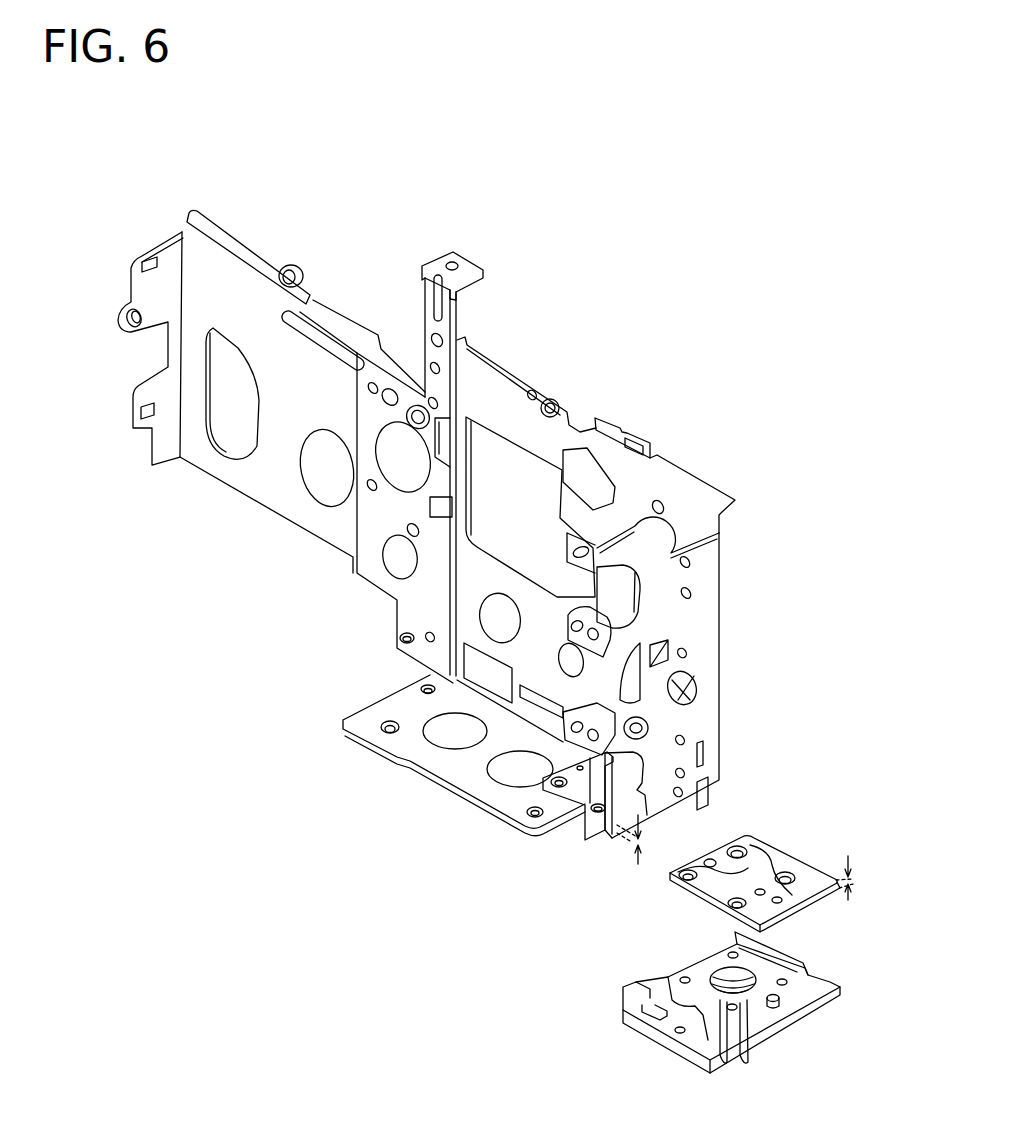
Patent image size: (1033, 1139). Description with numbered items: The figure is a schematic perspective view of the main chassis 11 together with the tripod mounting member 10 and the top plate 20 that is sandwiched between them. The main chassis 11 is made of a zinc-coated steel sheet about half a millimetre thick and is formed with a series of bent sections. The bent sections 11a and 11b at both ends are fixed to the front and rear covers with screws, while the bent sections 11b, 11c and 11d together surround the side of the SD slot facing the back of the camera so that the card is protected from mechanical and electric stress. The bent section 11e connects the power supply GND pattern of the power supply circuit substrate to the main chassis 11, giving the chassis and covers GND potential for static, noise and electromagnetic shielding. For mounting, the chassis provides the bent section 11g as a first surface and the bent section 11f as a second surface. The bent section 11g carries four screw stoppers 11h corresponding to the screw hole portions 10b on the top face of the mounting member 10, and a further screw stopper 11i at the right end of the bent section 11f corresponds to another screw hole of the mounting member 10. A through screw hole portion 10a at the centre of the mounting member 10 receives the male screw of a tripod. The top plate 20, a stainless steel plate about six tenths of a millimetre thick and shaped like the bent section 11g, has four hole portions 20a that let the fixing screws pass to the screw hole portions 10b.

The mounting member 10 is at (653, 1040).
The screw hole portion 10a is at (723, 977).
The screw hole portions 10b is at (745, 1055).
The main chassis 11 is at (683, 478).
The bent section 11a is at (703, 635).
The bent section 11b is at (163, 236).
The bent section 11c is at (252, 500).
The bent section 11d is at (366, 337).
The bent section 11e is at (398, 372).
The bent section 11f is at (480, 787).
The bent section 11g is at (640, 838).
The screw stoppers 11h is at (598, 833).
The screw stopper 11i is at (512, 813).
The top plate 20 is at (712, 895).
The hole portions 20a is at (795, 878).